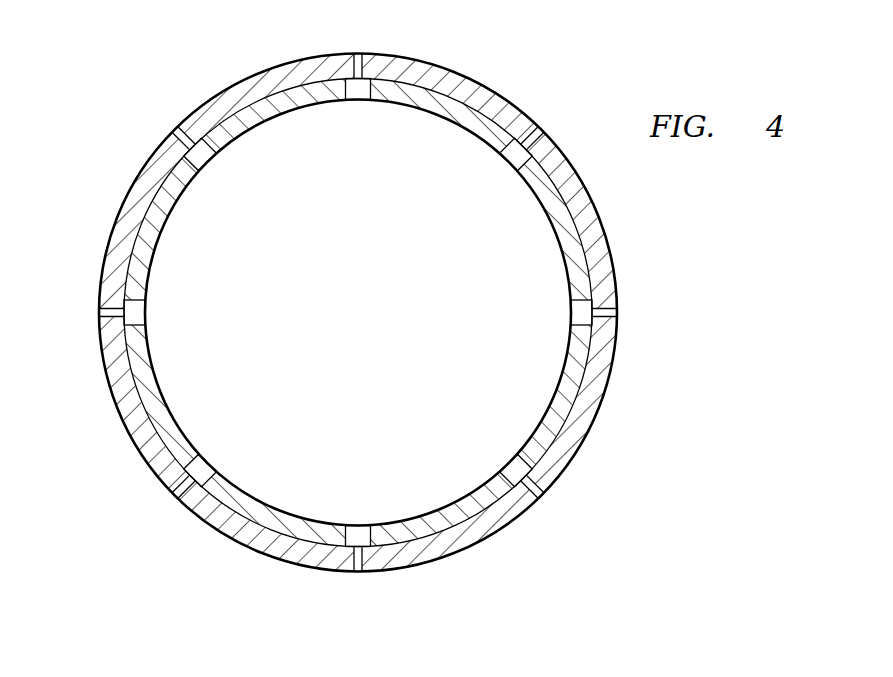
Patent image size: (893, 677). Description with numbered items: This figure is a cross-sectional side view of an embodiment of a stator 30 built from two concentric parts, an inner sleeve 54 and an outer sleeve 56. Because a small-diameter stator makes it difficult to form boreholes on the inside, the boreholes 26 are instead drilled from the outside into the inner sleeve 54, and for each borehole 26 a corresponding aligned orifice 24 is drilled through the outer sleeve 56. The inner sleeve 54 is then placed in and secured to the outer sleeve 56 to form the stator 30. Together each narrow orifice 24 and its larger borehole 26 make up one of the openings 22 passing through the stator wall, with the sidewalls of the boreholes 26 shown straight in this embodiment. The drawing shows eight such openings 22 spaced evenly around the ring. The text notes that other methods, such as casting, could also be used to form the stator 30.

The opening 22 is at (373, 111).
The orifice 24 is at (360, 53).
The borehole 26 is at (358, 96).
The stator 30 is at (699, 273).
The inner sleeve 54 is at (250, 113).
The outer sleeve 56 is at (492, 100).